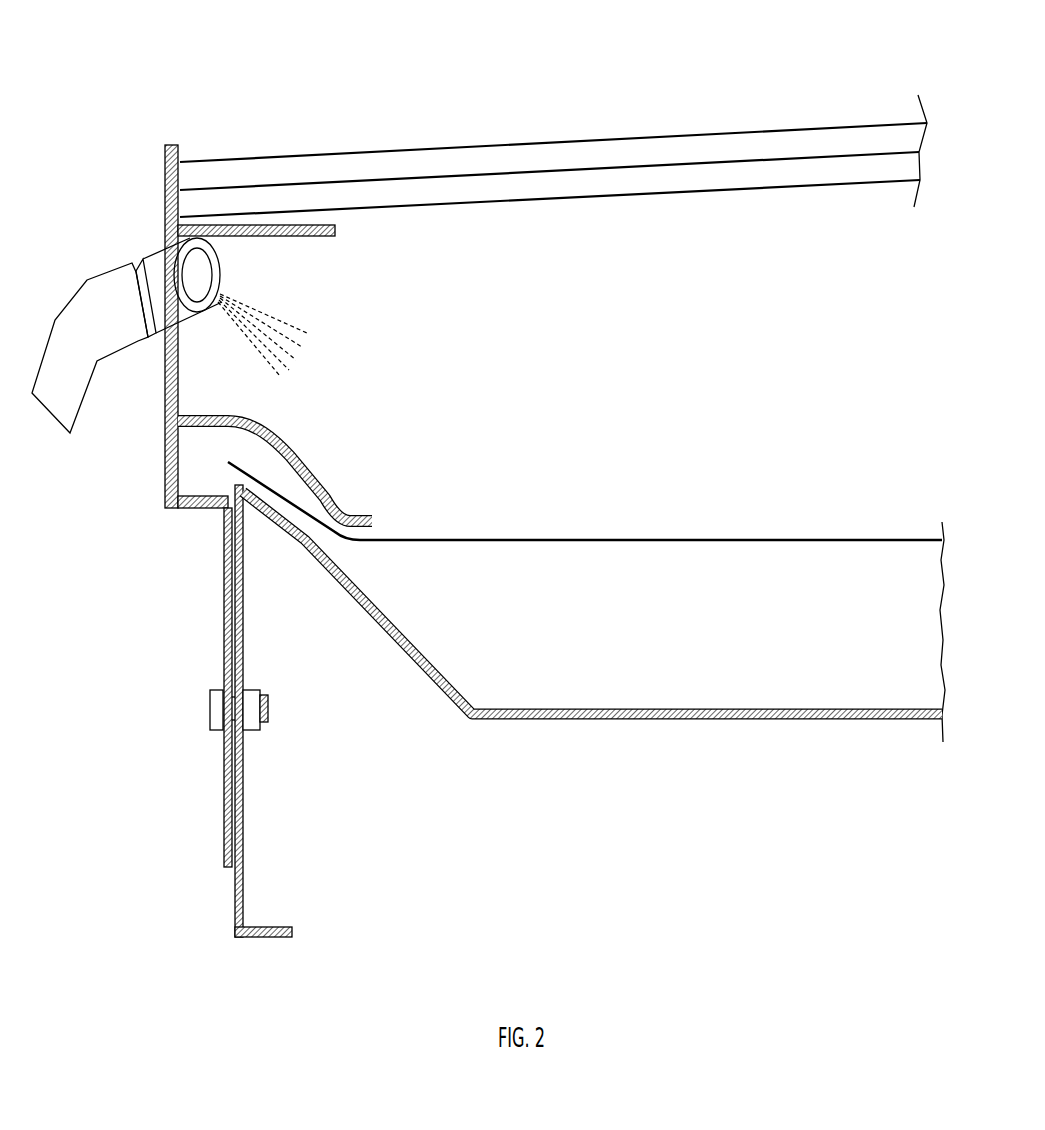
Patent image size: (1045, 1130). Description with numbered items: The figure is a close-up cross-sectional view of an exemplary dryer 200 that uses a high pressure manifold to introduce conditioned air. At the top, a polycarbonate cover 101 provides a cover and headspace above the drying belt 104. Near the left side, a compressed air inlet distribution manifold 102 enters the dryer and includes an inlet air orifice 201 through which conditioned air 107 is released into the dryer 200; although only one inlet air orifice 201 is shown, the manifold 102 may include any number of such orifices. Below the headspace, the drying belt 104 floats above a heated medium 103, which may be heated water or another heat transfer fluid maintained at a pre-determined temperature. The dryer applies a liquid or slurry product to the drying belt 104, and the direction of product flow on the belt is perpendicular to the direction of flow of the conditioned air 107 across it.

The dryer 200 is at (180, 60).
The polycarbonate cover 101 is at (512, 138).
The compressed air inlet distribution manifold 102 is at (66, 396).
The inlet air orifice 201 is at (226, 251).
The conditioned air 107 is at (291, 326).
The drying belt 104 is at (665, 530).
The heated medium 103 is at (795, 647).